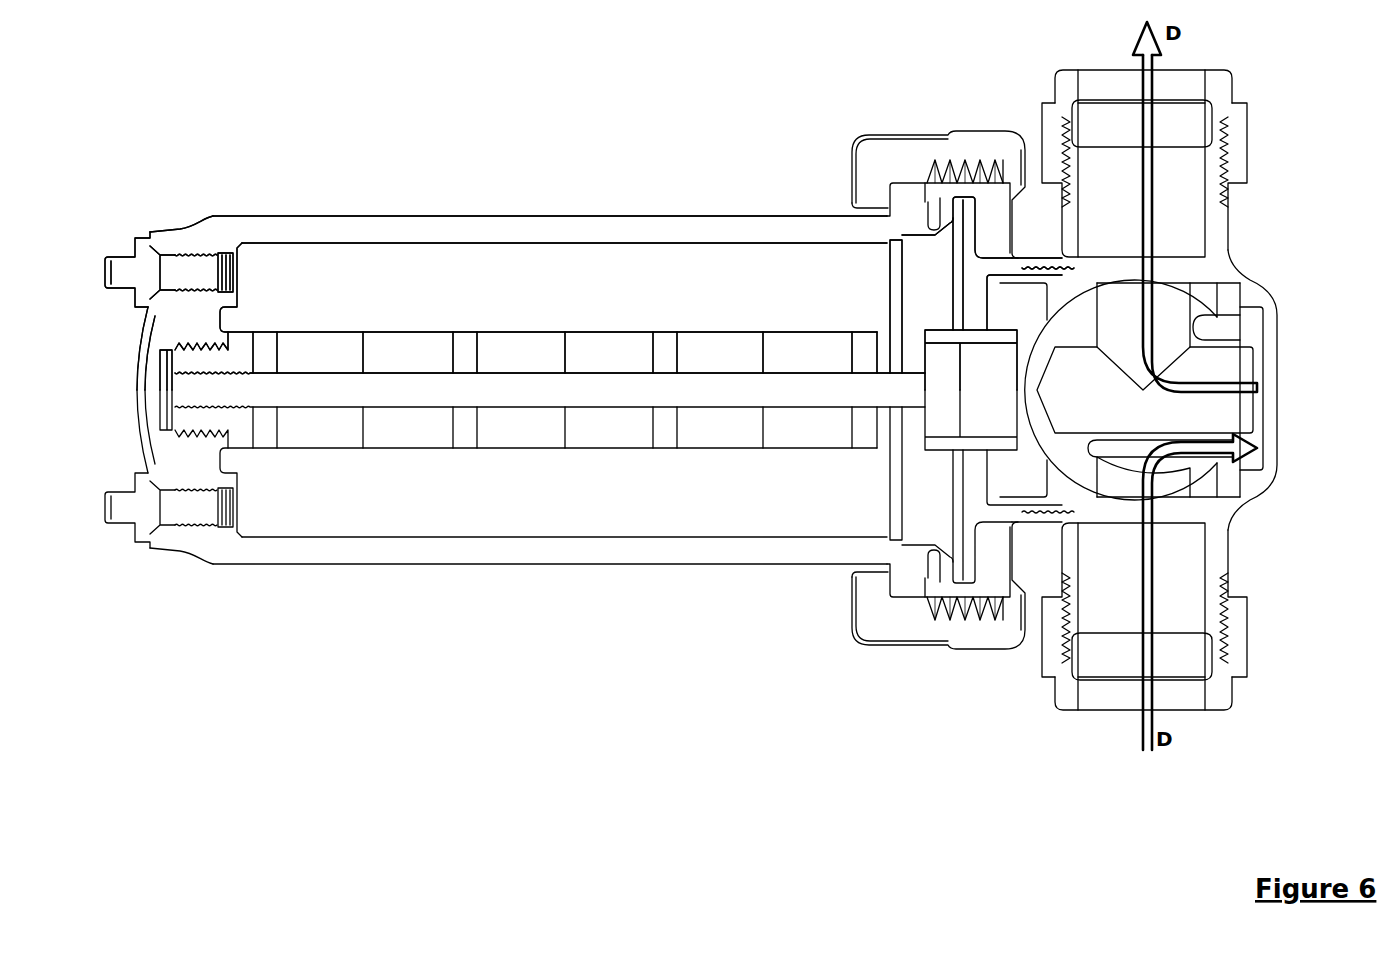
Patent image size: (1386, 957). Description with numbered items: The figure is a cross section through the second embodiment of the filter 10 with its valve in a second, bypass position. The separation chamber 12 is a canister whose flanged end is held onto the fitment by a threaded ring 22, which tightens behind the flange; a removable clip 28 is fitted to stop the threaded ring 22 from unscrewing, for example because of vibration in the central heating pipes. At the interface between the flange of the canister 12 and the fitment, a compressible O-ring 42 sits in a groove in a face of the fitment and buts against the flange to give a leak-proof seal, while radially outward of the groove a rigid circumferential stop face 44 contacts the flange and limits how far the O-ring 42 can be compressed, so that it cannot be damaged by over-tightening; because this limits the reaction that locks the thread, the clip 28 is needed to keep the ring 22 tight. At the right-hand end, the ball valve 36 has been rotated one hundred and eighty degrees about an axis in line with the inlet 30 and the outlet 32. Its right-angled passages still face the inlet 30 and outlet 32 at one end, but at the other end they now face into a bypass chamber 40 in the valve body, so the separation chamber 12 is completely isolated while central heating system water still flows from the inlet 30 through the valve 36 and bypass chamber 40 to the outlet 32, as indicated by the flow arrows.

The filter 10 is at (196, 184).
The separation chamber 12 is at (470, 220).
The threaded ring 22 is at (876, 159).
The removable clip 28 is at (914, 134).
The compressible O-ring 42 is at (936, 202).
The circumferential stop face 44 is at (951, 182).
The outlet 32 is at (1199, 101).
The ball valve 36 is at (1207, 305).
The bypass chamber 40 is at (1263, 461).
The inlet 30 is at (1211, 695).